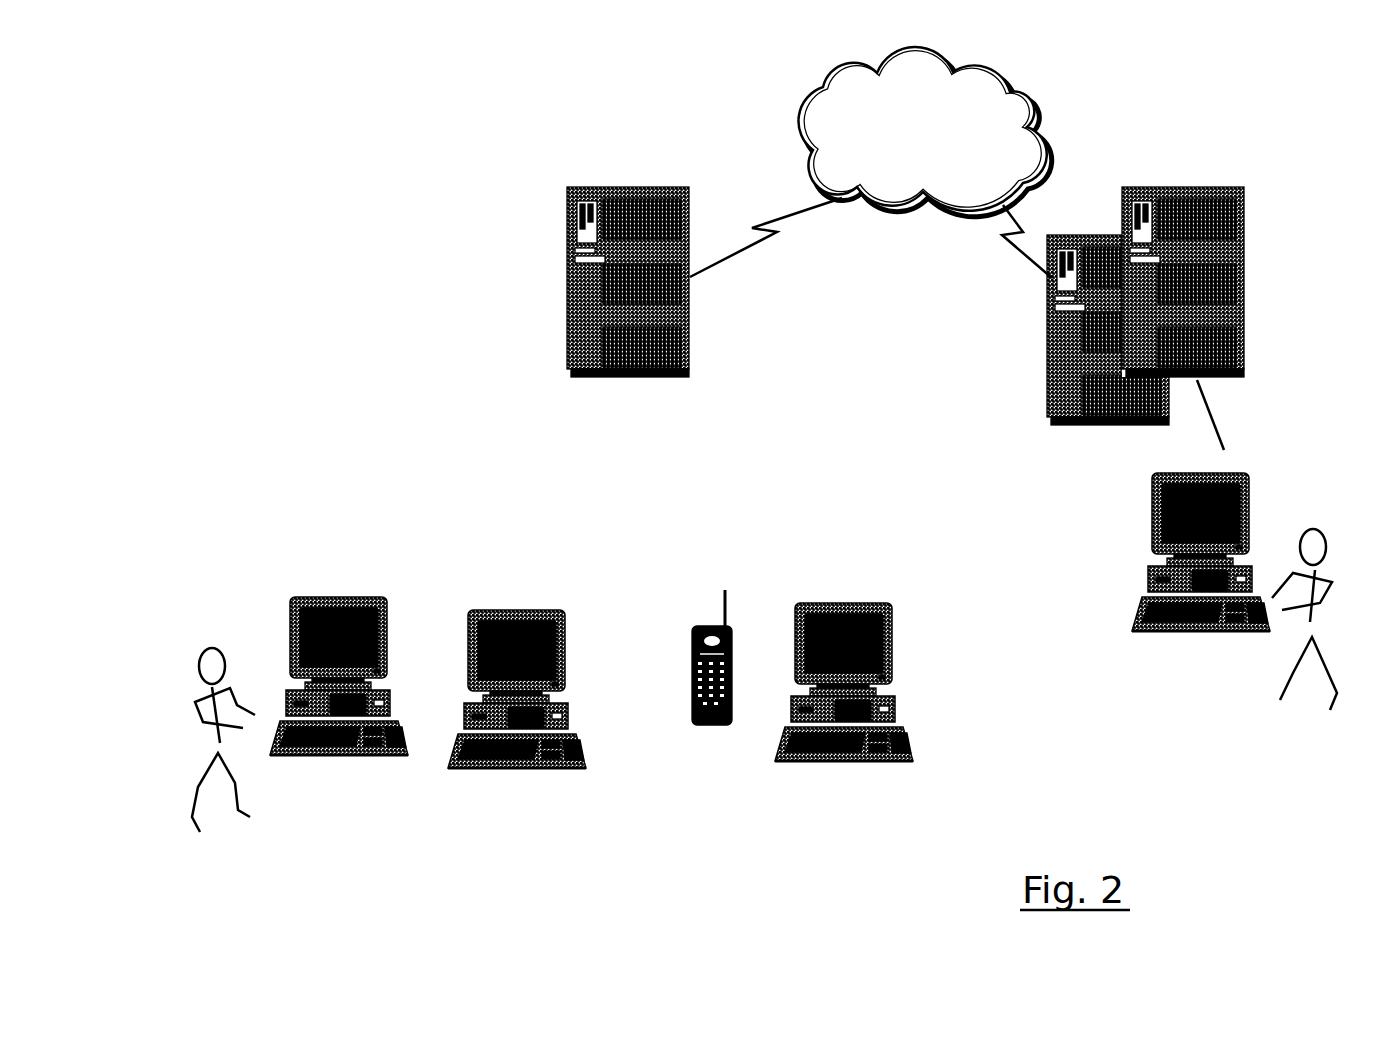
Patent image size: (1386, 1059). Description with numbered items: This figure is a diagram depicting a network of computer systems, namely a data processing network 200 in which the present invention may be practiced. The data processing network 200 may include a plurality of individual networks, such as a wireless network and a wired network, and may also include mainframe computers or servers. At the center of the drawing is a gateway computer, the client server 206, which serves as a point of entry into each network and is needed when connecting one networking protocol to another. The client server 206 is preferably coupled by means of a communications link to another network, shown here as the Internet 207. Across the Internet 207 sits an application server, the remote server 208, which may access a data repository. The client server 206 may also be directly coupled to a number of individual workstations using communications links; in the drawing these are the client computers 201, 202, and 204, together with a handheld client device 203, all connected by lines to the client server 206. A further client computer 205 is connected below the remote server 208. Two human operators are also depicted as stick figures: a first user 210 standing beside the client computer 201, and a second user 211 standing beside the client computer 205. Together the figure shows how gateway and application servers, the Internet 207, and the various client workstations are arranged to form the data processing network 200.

The data processing network 200 is at (339, 189).
The client 1 computer 201 is at (557, 357).
The client 2 computer 202 is at (612, 378).
The client 3 mobile phone 203 is at (645, 378).
The client 4 computer 204 is at (683, 378).
The client 5 computer 205 is at (1192, 560).
The client server 206 is at (636, 245).
The Internet 207 is at (924, 116).
The remote server 208 is at (1177, 268).
The user 1 210 is at (215, 745).
The user 5 211 is at (1295, 625).